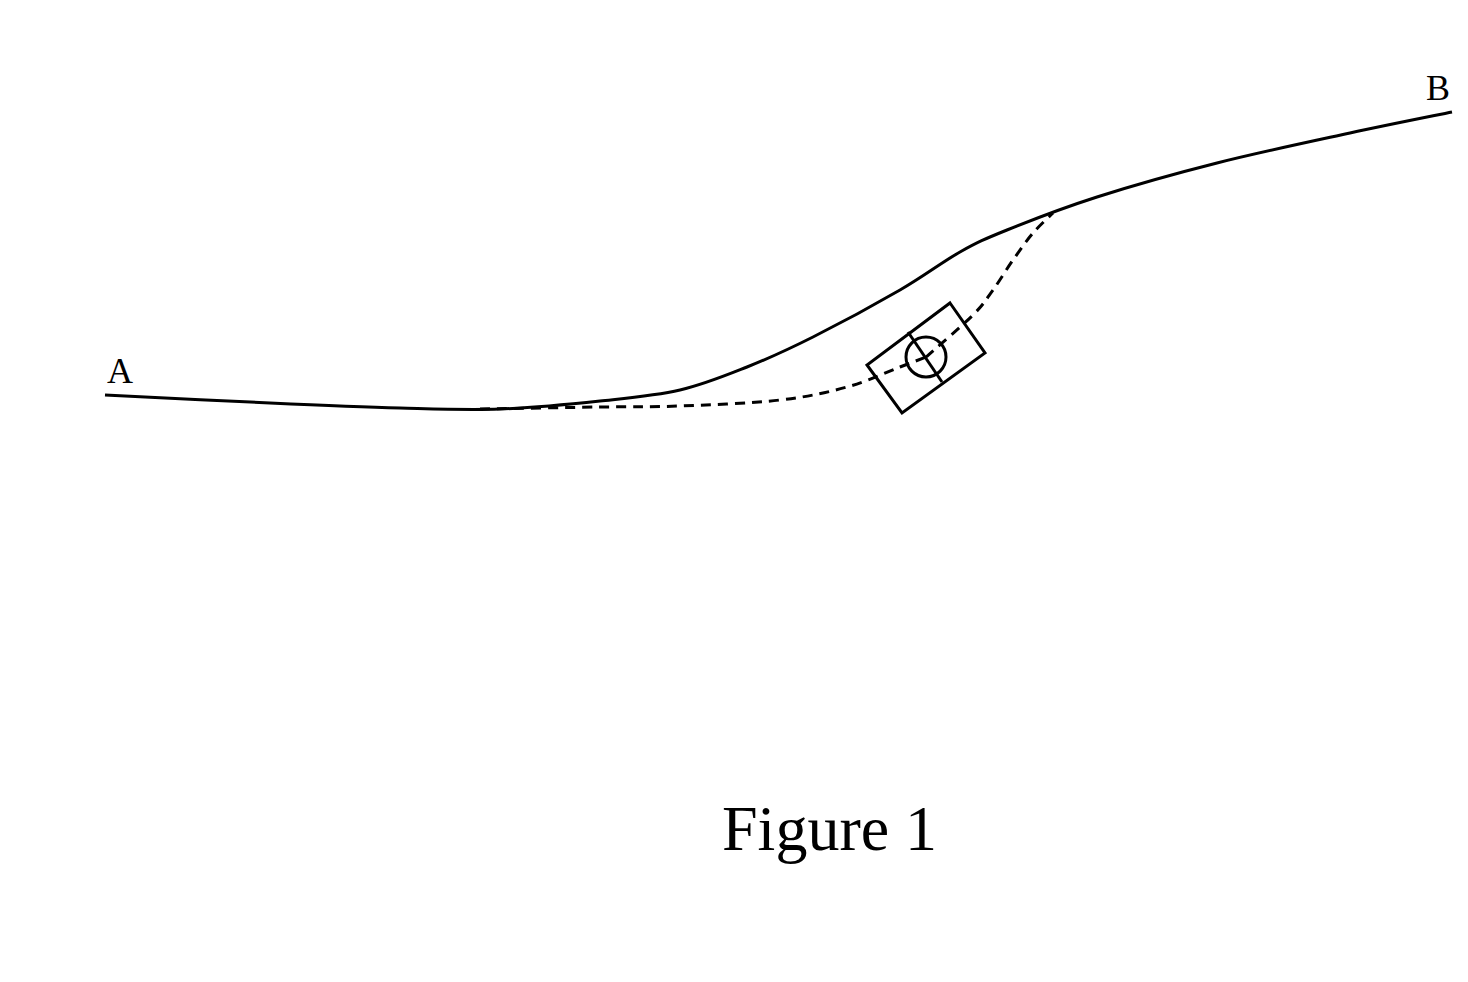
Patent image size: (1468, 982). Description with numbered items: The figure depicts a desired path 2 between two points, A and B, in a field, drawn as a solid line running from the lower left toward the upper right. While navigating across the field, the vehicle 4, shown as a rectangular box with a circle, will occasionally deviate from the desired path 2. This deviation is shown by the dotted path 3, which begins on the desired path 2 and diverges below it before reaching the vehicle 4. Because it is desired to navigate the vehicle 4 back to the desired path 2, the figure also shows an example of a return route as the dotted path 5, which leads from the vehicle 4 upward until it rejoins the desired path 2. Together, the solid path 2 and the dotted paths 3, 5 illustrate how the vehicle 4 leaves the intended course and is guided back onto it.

The desired path 2 is at (272, 404).
The dotted path 3 is at (718, 406).
The vehicle 4 is at (975, 360).
The dotted path 5 is at (1022, 257).